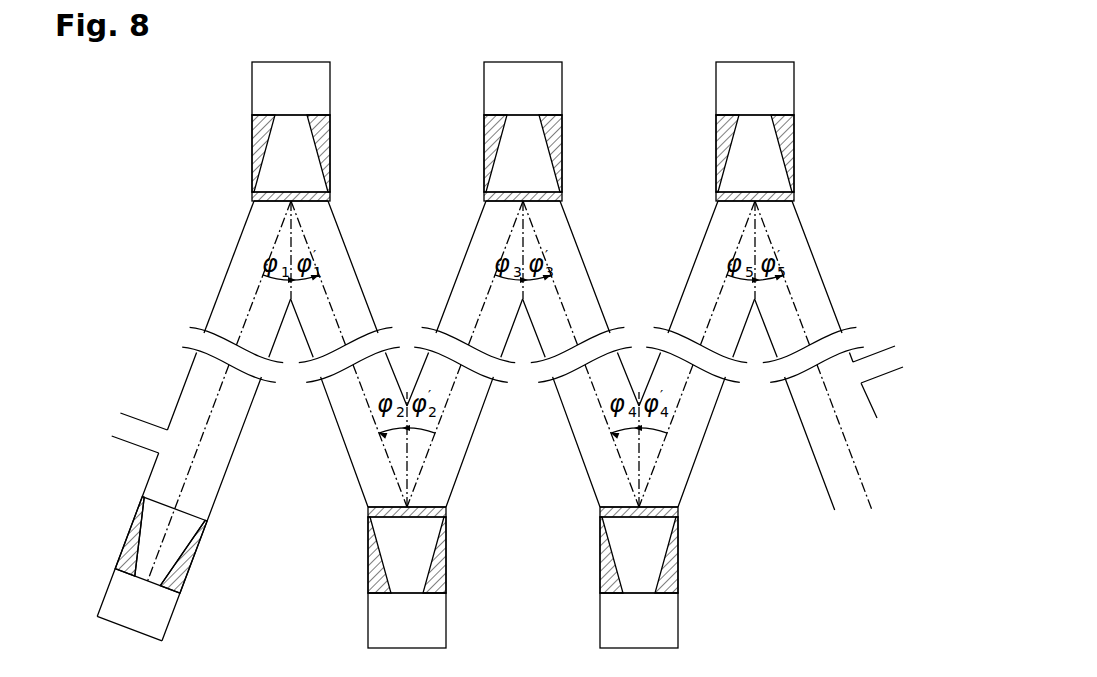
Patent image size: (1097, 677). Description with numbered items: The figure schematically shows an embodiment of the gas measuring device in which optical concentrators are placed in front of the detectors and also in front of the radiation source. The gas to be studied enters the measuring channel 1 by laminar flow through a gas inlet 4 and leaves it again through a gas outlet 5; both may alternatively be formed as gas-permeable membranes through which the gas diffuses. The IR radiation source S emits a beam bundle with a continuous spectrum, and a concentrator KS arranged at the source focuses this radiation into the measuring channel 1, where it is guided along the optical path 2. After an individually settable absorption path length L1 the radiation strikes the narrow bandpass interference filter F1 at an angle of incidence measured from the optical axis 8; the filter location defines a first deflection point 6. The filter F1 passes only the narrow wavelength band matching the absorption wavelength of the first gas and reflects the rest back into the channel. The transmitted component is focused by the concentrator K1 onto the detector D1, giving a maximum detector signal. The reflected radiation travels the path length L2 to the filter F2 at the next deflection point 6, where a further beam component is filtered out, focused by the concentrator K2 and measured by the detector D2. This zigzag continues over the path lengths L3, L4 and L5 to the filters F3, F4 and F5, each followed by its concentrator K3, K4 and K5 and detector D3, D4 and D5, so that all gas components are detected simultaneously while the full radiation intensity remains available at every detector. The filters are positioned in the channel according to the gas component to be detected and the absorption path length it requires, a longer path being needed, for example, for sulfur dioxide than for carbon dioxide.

The measuring channel 1 is at (182, 410).
The optical path 2 is at (247, 317).
The gas inlet 4 is at (112, 423).
The gas outlet 5 is at (900, 357).
The deflection point 6 is at (291, 206).
The optical axis 8 is at (291, 246).
The concentrator in front of the radiation source KS is at (128, 522).
The radiation source S is at (138, 605).
The detector 1 D1 is at (291, 88).
The detector 2 D2 is at (407, 620).
The detector 3 D3 is at (523, 88).
The detector 4 D4 is at (639, 620).
The detector 5 D5 is at (755, 88).
The concentrator 1 K1 is at (328, 158).
The concentrator 2 K2 is at (372, 550).
The concentrator 3 K3 is at (560, 158).
The concentrator 4 K4 is at (604, 552).
The concentrator 5 K5 is at (792, 158).
The filter 1 F1 is at (330, 198).
The filter 2 F2 is at (368, 512).
The filter 3 F3 is at (562, 198).
The filter 4 F4 is at (600, 512).
The filter 5 F5 is at (794, 198).
The absorption path length 1 L1 is at (194, 421).
The absorption path length 2 L2 is at (349, 354).
The absorption path length 3 L3 is at (465, 354).
The absorption path length 4 L4 is at (581, 354).
The absorption path length 5 L5 is at (697, 354).